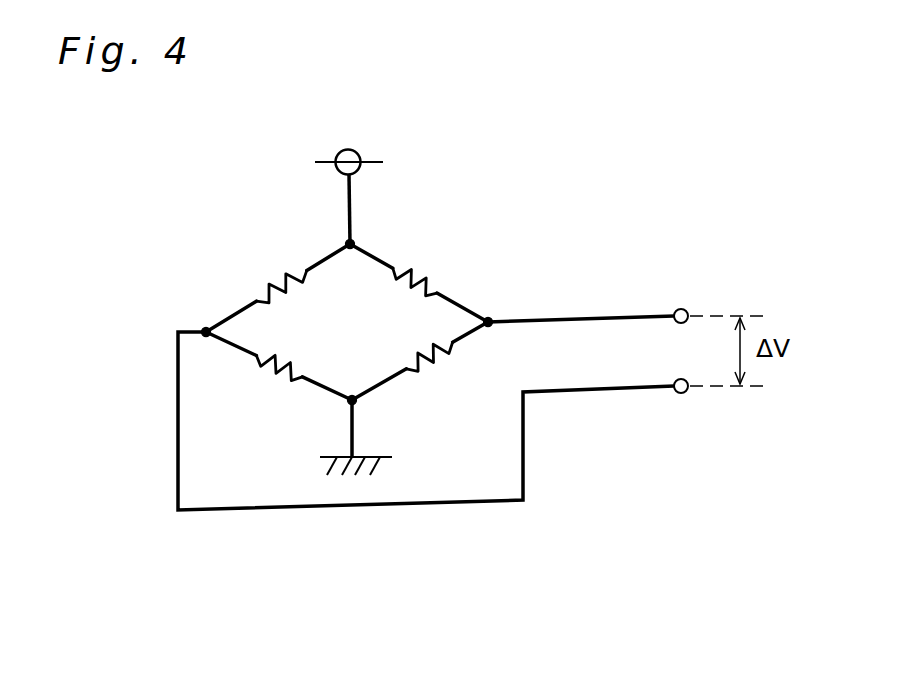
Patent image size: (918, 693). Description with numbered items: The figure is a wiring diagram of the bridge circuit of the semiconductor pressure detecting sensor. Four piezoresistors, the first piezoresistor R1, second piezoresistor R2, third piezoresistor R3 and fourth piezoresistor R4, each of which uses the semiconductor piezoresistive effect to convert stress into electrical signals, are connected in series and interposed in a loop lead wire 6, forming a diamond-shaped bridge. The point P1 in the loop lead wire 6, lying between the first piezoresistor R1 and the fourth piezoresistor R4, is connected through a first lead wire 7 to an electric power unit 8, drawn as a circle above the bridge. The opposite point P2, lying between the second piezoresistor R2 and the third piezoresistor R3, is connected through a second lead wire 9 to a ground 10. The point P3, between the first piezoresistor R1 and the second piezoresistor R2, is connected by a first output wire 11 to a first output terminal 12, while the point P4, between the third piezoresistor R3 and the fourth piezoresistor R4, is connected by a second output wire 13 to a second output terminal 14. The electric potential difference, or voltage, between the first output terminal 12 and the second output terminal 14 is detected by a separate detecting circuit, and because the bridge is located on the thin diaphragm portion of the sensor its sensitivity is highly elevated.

The loop lead wire 6 is at (331, 294).
The first lead wire 7 is at (353, 193).
The electric power unit 8 is at (352, 149).
The second lead wire 9 is at (344, 419).
The ground 10 is at (386, 457).
The first output wire 11 is at (523, 447).
The first output terminal 12 is at (677, 393).
The second output wire 13 is at (582, 318).
The second output terminal 14 is at (678, 309).
The point P1 is at (350, 243).
The point P2 is at (357, 403).
The point P3 is at (205, 327).
The point P4 is at (490, 323).
The first piezoresistor R1 is at (293, 267).
The second piezoresistor R2 is at (267, 370).
The third piezoresistor R3 is at (427, 368).
The fourth piezoresistor R4 is at (437, 280).